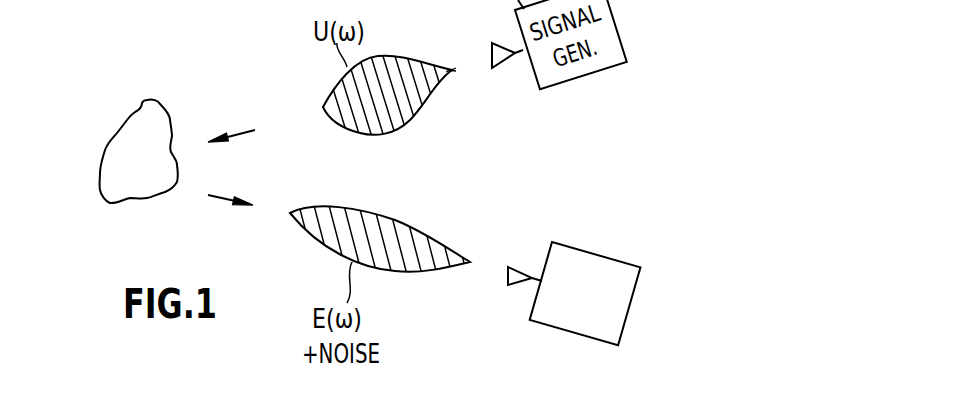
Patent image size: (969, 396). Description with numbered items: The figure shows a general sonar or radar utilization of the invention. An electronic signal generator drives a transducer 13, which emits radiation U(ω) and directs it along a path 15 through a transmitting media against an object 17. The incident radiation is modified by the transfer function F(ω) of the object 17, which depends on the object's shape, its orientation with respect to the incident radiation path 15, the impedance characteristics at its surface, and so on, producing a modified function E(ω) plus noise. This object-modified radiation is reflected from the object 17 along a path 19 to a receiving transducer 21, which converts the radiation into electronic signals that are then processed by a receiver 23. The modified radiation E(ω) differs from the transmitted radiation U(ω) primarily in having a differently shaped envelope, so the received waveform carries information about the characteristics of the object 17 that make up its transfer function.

The transducer 13 is at (502, 68).
The path 15 is at (230, 133).
The object 17 is at (118, 133).
The path 19 is at (220, 198).
The receiving transducer 21 is at (515, 267).
The receiver 23 is at (532, 323).